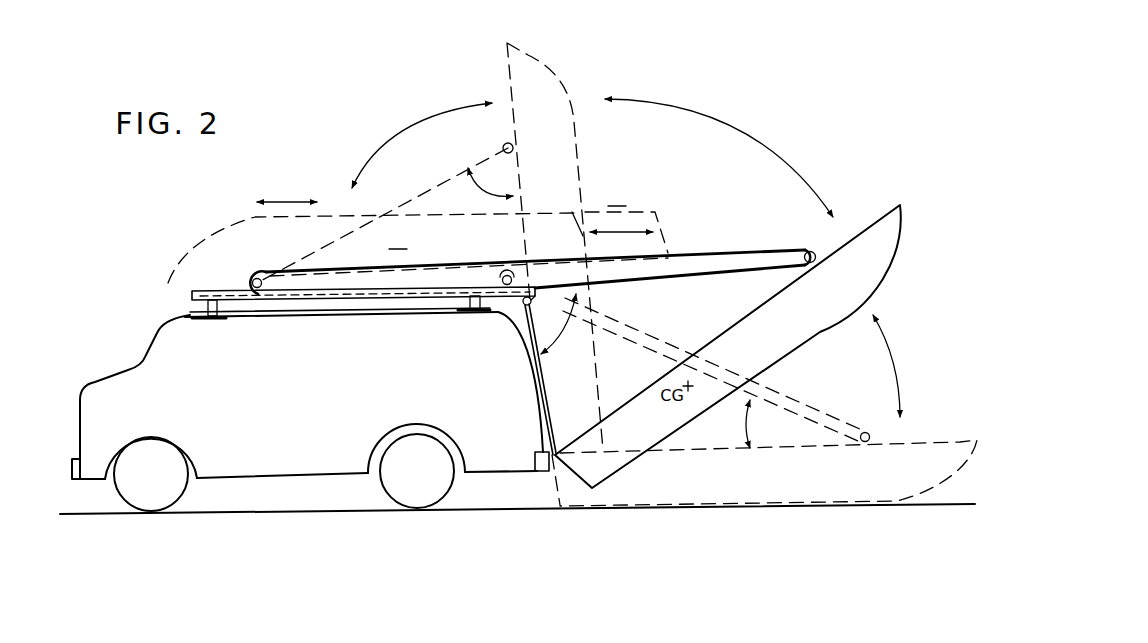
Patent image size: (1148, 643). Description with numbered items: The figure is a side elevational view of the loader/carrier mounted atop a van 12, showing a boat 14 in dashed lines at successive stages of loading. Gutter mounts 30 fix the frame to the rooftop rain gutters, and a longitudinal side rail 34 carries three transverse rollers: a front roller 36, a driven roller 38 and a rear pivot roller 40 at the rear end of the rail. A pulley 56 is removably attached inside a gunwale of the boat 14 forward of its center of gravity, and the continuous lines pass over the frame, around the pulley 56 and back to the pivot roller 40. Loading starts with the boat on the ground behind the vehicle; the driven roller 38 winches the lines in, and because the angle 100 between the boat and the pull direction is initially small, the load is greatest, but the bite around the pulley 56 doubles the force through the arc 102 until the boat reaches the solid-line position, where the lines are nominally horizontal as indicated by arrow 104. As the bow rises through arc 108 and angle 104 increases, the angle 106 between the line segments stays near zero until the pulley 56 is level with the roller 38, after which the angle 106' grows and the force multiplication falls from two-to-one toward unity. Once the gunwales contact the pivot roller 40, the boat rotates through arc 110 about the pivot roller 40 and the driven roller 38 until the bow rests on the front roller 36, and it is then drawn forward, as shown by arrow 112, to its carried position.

The van 12 is at (141, 352).
The boat 14 is at (501, 58).
The gutter mounts 30 is at (213, 318).
The left longitudinal side rail 34 is at (228, 290).
The front roller 36 is at (256, 276).
The driven roller 38 is at (503, 276).
The rear pivot roller 40 is at (524, 327).
The pulley 56 is at (503, 146).
The angle 100 is at (745, 425).
The arc 102 is at (899, 376).
The angle 104 is at (563, 328).
The angle 106 is at (559, 294).
The angle 106' is at (474, 186).
The arc 108 is at (736, 136).
The arc 110 is at (408, 138).
The arrow 112 is at (285, 200).